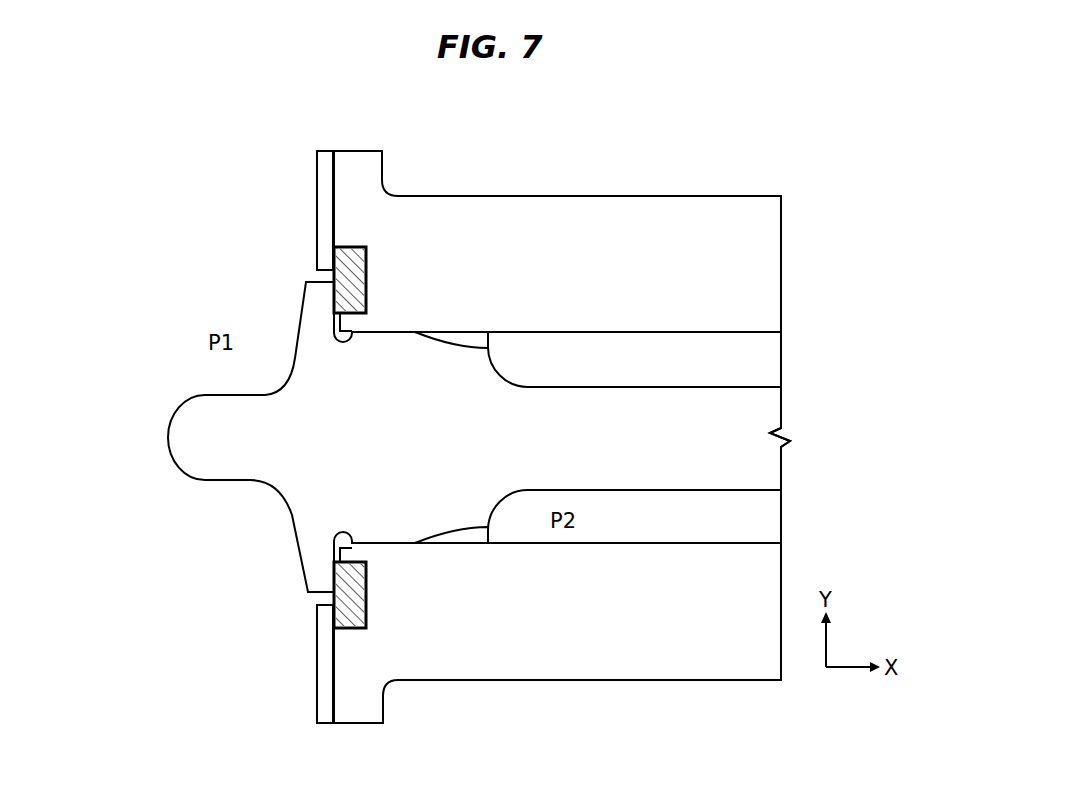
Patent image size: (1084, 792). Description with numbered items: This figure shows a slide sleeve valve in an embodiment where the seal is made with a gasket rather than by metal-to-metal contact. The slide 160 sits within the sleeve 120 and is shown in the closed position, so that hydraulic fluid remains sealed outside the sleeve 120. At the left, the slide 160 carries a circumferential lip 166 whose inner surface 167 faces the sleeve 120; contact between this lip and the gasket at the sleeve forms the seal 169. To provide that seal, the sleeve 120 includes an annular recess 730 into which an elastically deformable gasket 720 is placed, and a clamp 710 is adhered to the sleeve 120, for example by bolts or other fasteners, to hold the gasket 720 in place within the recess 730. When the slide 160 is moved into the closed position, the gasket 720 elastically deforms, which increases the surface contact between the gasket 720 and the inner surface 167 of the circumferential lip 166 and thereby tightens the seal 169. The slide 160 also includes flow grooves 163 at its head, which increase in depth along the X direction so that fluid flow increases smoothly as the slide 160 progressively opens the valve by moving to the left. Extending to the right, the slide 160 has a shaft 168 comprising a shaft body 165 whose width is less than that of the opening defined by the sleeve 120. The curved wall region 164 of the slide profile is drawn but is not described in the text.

The sleeve 120 is at (572, 660).
The slide 160 is at (298, 500).
The flow grooves 163 is at (459, 336).
The rounded bulge of wall 164 is at (183, 445).
The shaft body 165 is at (648, 400).
The circumferential lip 166 is at (310, 590).
The inner surface 167 is at (352, 550).
The shaft 168 is at (781, 405).
The seal 169 is at (323, 568).
The clamp 710 is at (317, 205).
The gasket 720 is at (355, 268).
The annular recess 730 is at (356, 236).